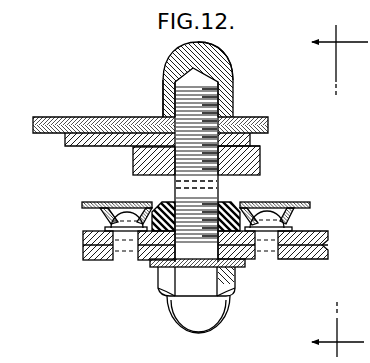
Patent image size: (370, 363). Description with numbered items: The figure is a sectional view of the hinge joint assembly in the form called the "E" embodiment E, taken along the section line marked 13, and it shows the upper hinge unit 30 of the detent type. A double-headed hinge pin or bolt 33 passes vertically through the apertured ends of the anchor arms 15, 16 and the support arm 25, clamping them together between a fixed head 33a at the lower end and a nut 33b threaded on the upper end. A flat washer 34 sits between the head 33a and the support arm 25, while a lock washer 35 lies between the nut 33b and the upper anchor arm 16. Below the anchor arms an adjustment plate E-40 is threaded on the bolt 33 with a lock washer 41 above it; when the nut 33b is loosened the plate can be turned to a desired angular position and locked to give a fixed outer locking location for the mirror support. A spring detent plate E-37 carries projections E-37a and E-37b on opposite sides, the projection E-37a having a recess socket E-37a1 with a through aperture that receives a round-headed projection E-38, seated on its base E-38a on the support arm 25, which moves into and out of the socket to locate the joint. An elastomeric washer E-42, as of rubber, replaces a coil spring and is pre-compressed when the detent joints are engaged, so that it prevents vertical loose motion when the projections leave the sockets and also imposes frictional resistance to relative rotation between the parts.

The E embodiment E is at (114, 84).
The section line 13- 13 is at (340, 192).
The upper hinge unit 30 is at (167, 54).
The nut 33b is at (236, 72).
The lock washer 35 is at (158, 114).
The hinge pin or bolt 33 is at (220, 101).
The upper anchor arm 16 is at (52, 117).
The anchor arm 15 is at (76, 146).
The adjustment plate E-40 is at (132, 175).
The lock washer 41 is at (261, 147).
The projection E-37b is at (258, 176).
The elastomeric washer E-42 is at (160, 206).
The projection E-37a is at (84, 205).
The recess socket E-37a1 is at (117, 213).
The spring detent plate E-37 is at (306, 203).
The projection E-38 is at (268, 211).
The contact base E-38a is at (292, 229).
The support arm 25 is at (100, 261).
The flat washer 34 is at (157, 266).
The head 33a is at (226, 312).